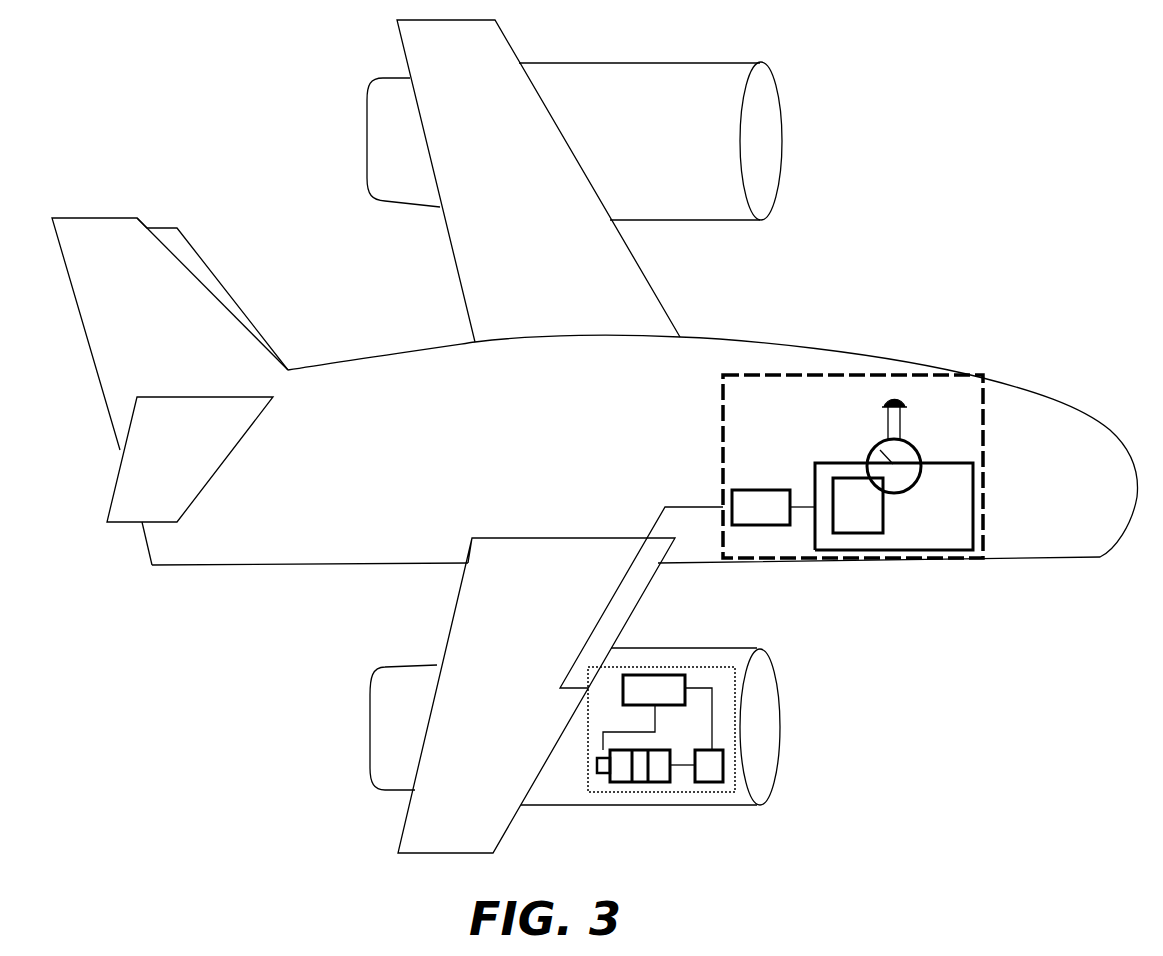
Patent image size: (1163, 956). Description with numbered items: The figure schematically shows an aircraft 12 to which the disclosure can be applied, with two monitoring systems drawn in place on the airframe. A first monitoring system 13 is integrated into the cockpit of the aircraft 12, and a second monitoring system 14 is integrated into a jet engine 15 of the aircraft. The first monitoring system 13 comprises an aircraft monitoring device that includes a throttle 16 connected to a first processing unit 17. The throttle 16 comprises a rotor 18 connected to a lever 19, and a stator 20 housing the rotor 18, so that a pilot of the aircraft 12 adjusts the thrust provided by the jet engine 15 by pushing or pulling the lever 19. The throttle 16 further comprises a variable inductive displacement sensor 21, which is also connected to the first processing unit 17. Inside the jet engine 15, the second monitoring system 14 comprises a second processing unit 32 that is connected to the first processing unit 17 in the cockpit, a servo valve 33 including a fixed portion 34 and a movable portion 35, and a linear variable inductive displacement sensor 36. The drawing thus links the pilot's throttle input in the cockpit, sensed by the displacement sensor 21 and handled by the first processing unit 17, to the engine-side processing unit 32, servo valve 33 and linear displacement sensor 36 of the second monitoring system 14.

The aircraft 12 is at (1001, 130).
The first monitoring system 13 is at (983, 469).
The second monitoring system 14 is at (719, 662).
The jet engine 15 is at (379, 794).
The throttle 16 is at (897, 556).
The first processing unit 17 is at (761, 484).
The rotor 18 is at (867, 460).
The lever 19 is at (900, 392).
The stator 20 is at (947, 487).
The variable inductive displacement sensor 21 is at (858, 505).
The second processing unit 32 is at (656, 670).
The servo valve 33 is at (612, 790).
The fixed portion 34 is at (657, 788).
The movable portion 35 is at (680, 770).
The linear variable inductive displacement sensor 36 is at (712, 788).